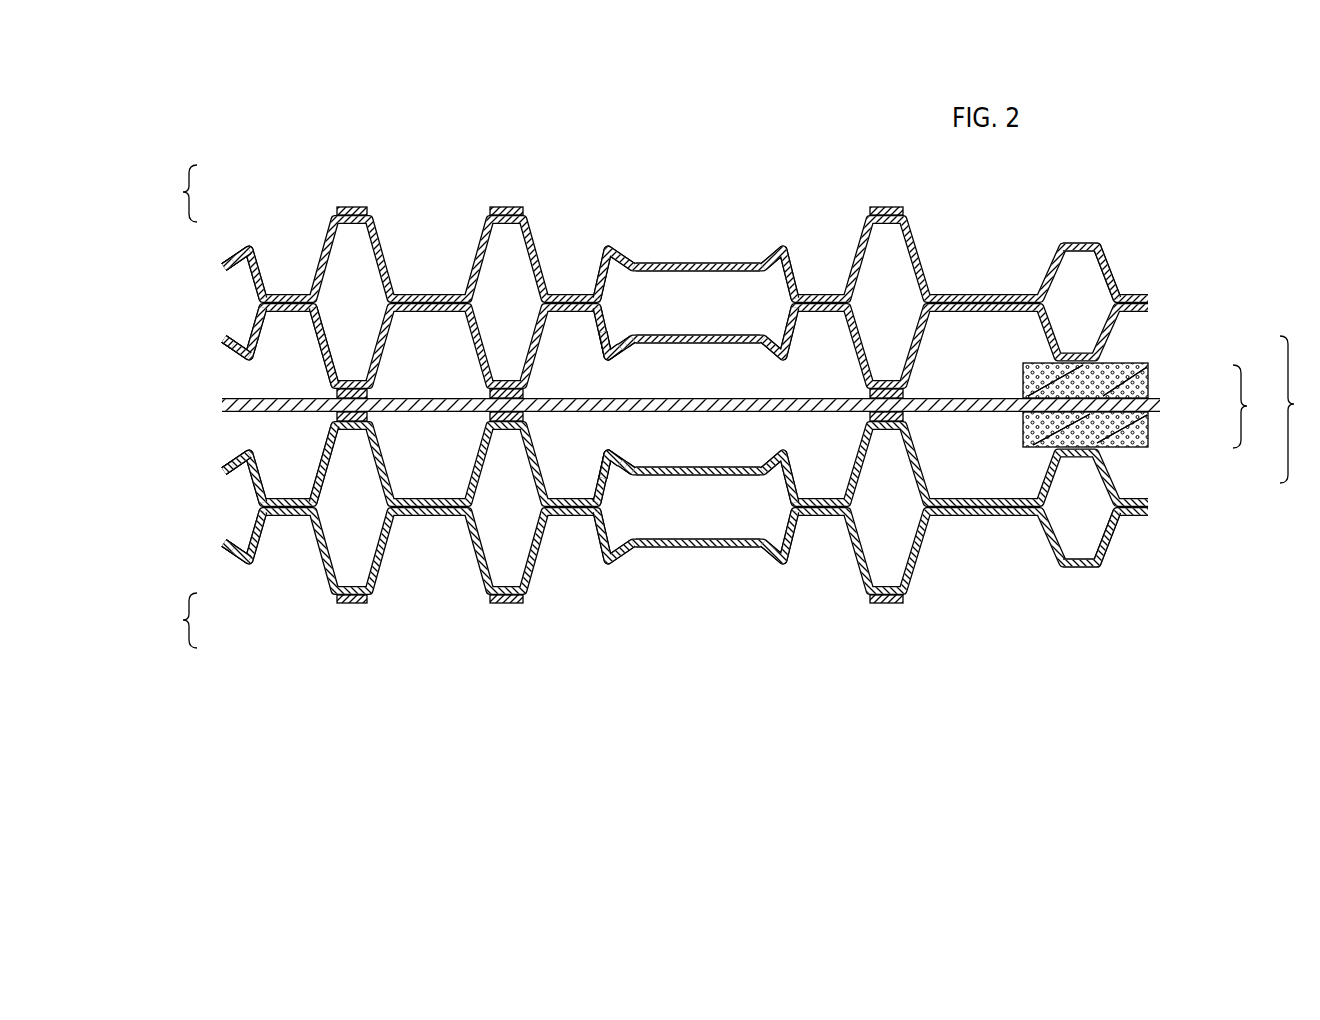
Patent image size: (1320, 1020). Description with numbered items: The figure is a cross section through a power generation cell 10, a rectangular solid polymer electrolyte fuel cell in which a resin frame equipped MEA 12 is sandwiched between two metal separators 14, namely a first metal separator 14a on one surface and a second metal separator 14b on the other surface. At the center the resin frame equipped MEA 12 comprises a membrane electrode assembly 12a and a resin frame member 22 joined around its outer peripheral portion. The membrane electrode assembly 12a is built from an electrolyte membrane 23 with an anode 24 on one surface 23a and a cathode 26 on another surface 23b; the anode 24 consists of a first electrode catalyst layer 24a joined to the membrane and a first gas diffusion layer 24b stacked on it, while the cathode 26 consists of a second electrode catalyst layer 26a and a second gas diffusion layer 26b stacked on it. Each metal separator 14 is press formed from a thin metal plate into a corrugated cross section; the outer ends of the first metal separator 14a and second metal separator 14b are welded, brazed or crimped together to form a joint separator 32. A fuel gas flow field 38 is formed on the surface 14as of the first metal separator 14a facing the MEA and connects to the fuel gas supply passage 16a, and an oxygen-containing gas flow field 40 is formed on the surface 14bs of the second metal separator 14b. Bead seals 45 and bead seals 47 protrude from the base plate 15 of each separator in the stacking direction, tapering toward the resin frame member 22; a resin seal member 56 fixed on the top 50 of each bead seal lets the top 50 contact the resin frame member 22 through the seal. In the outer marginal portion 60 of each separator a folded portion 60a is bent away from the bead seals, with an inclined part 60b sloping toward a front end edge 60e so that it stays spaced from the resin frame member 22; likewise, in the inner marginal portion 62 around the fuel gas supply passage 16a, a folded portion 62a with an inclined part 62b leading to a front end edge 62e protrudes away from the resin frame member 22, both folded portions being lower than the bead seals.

The power generation cell 10 is at (1299, 409).
The resin frame equipped MEA 12 is at (222, 404).
The membrane electrode assembly 12a is at (1257, 406).
The metal separator 14 is at (737, 407).
The first metal separator 14a is at (378, 337).
The second metal separator 14b is at (332, 215).
The surface of first metal separator 14as is at (977, 313).
The surface of second metal separator 14bs is at (975, 497).
The base plate 15 is at (573, 313).
The fuel gas supply passage 16a is at (698, 335).
The resin frame member 22 is at (447, 397).
The electrolyte membrane 23 is at (1165, 405).
The one surface of electrolyte membrane 23a is at (1093, 330).
The another surface of electrolyte membrane 23b is at (1090, 480).
The anode 24 is at (1150, 370).
The first electrode catalyst layer 24a is at (1082, 392).
The first gas diffusion layer 24b is at (1032, 376).
The cathode 26 is at (1150, 428).
The second electrode catalyst layer 26a is at (1080, 414).
The second gas diffusion layer 26b is at (1038, 415).
The joint separator 32 is at (178, 406).
The fuel gas flow field 38 is at (1138, 322).
The oxygen-containing gas flow field 40 is at (1138, 488).
The bead seal 45 is at (317, 356).
The bead seal 47 is at (317, 454).
The top 50 is at (357, 386).
The resin seal member 56 is at (356, 207).
The outer marginal portion 60 is at (232, 352).
The folded portion 60a is at (226, 338).
The inclined part 60b is at (236, 405).
The front end edge 60e is at (229, 340).
The inner marginal portion 62 is at (622, 333).
The folded portion 62a is at (631, 351).
The inclined part 62b is at (611, 405).
The front end edge 62e is at (634, 334).